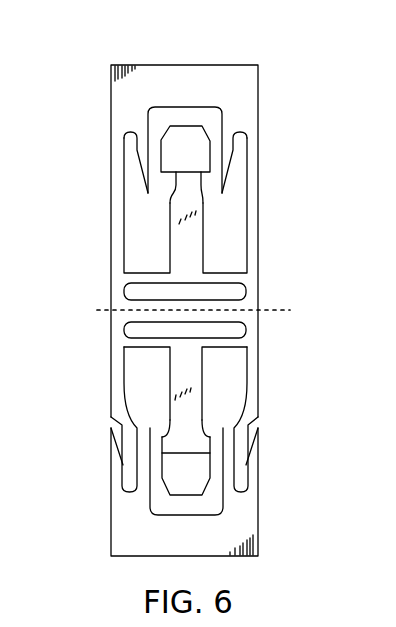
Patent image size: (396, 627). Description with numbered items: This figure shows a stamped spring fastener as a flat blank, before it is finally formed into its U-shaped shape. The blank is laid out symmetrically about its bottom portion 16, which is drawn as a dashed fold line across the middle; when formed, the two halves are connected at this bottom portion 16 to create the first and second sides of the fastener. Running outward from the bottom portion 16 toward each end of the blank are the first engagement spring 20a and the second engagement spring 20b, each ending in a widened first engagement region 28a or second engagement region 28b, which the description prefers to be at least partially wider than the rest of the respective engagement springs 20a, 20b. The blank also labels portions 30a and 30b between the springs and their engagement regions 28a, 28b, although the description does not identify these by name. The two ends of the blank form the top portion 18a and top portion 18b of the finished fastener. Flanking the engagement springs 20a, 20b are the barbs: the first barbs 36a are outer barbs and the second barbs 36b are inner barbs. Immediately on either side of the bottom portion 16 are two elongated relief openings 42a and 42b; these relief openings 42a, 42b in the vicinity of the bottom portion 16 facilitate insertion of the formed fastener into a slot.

The bottom portion 16 is at (122, 308).
The top portion 18a is at (143, 548).
The top portion 18b is at (196, 75).
The first engagement spring 20a is at (193, 368).
The second engagement spring 20b is at (197, 238).
The first engagement region 28a is at (172, 476).
The second engagement region 28b is at (190, 134).
The first neck portion 30a is at (180, 450).
The second neck portion 30b is at (175, 178).
The first barbs 36a is at (115, 457).
The second barbs 36b is at (144, 158).
The relief opening 42a is at (234, 328).
The relief opening 42b is at (234, 291).